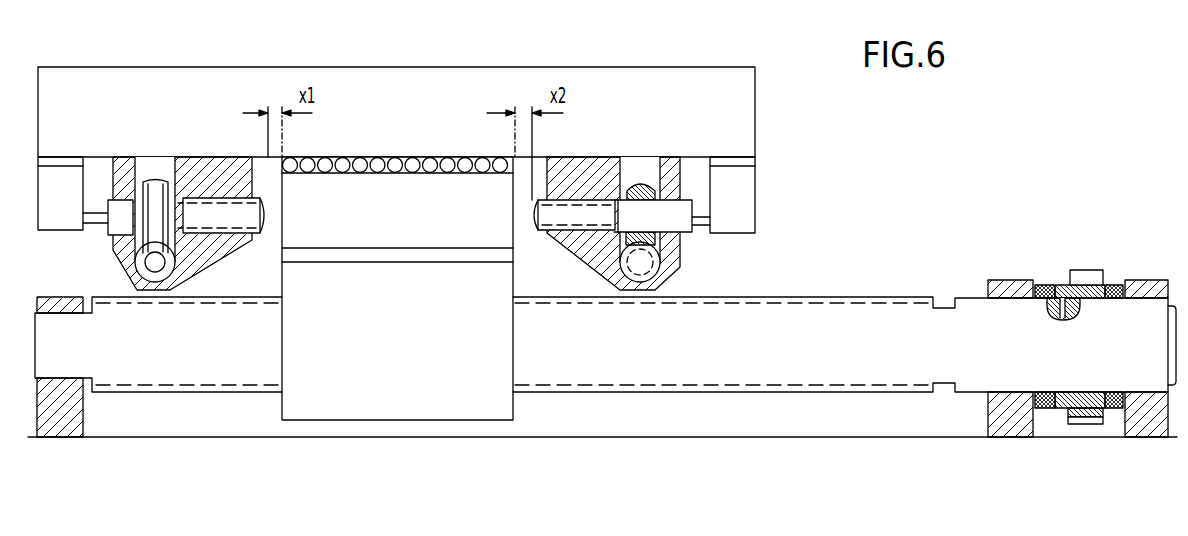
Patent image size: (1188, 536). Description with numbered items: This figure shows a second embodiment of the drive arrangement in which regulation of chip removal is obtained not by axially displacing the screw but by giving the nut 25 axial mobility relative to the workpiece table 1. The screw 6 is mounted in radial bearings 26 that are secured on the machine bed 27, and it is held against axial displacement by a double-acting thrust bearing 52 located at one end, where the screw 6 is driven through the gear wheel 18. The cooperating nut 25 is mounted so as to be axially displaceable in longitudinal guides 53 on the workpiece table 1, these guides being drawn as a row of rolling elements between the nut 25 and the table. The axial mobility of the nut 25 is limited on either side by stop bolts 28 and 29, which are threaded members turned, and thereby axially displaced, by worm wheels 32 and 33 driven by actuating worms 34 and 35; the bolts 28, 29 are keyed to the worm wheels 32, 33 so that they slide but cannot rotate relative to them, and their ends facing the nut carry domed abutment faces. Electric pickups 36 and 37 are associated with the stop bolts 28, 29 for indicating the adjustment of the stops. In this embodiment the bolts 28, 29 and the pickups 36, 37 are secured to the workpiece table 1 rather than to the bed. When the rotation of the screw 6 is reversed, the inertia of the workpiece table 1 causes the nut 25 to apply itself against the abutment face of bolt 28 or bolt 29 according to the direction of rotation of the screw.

The workpiece table 1 is at (398, 82).
The screw 6 is at (178, 365).
The gear wheel 18 is at (1080, 285).
The nut 25 is at (385, 396).
The radial bearings 26 is at (60, 417).
The machine bed 27 is at (525, 443).
The stop bolt 28 is at (235, 218).
The stop bolt 29 is at (579, 215).
The worm wheel 32 is at (155, 202).
The worm wheel 33 is at (645, 185).
The actuating worm 34 is at (197, 207).
The actuating worm 35 is at (657, 250).
The electric pickup 36 is at (55, 198).
The electric pickup 37 is at (735, 195).
The double-acting thrust bearing 52 is at (1042, 410).
The longitudinal guides 53 is at (438, 165).